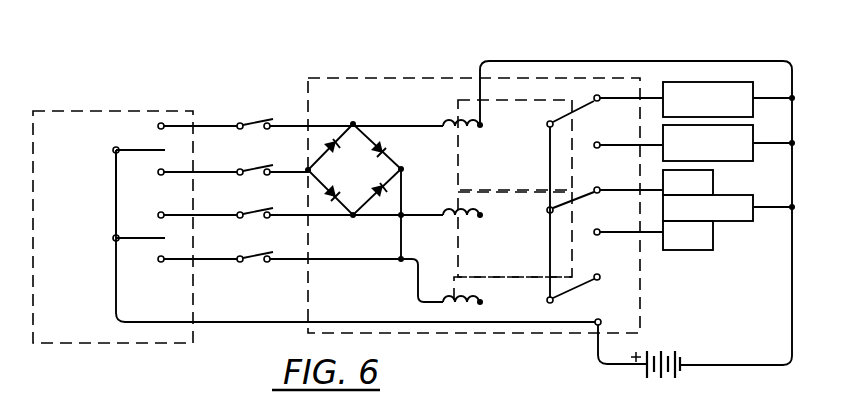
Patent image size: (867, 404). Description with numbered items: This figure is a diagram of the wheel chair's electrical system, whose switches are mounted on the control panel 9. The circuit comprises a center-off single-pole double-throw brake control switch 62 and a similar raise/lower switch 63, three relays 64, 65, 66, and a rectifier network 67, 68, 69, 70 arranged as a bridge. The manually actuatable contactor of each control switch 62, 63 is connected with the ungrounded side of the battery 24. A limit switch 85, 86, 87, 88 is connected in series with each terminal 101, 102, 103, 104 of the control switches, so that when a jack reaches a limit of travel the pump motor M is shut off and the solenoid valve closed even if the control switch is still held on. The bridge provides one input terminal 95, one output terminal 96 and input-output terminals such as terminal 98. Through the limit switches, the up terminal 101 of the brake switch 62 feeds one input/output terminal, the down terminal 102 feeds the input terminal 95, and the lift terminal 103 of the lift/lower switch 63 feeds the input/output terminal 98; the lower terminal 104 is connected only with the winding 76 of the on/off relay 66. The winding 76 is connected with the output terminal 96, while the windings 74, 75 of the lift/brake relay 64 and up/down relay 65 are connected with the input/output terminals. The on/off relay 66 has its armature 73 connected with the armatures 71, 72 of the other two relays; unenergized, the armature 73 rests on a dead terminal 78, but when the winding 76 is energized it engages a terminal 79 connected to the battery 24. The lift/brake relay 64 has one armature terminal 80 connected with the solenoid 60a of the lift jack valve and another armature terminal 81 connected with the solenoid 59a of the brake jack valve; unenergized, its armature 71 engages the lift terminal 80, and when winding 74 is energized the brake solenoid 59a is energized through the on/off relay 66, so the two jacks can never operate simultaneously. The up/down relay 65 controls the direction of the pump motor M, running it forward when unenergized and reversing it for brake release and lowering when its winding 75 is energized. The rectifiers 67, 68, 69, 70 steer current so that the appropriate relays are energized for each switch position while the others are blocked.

The control panel 9 is at (230, 82).
The brake control switch 62 is at (128, 140).
The raise/lower switch 63 is at (145, 247).
The up terminal 101 is at (164, 123).
The down terminal 102 is at (165, 175).
The lift terminal 103 is at (165, 218).
The lower terminal 104 is at (165, 262).
The limit switch 85 is at (254, 132).
The limit switch 86 is at (258, 176).
The limit switch 87 is at (258, 219).
The limit switch 88 is at (258, 263).
The input terminal 95 is at (307, 169).
The output terminal 96 is at (403, 168).
The terminal 79 is at (354, 121).
The input-output terminal 98 is at (355, 218).
The rectifier 67 is at (334, 150).
The rectifier 68 is at (335, 200).
The rectifier 69 is at (386, 149).
The rectifier 70 is at (371, 188).
The winding 74 is at (464, 131).
The winding 75 is at (455, 219).
The winding 76 is at (446, 304).
The lift/brake relay 64 is at (503, 121).
The up/down relay 65 is at (493, 215).
The on/off relay 66 is at (520, 293).
The armature 71 is at (586, 108).
The armature 72 is at (590, 200).
The armature 73 is at (590, 287).
The armature terminal 80 is at (598, 94).
The armature terminal 81 is at (599, 149).
The dead terminal 78 is at (600, 275).
The solenoid 60a is at (742, 82).
The solenoid 59a is at (753, 135).
The pump motor M is at (745, 196).
The battery 24 is at (668, 380).